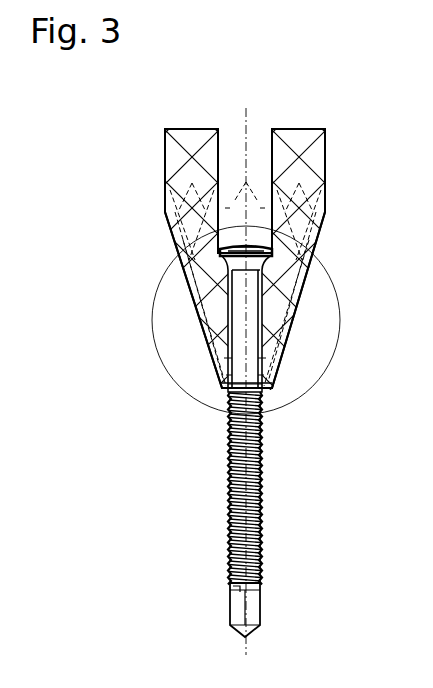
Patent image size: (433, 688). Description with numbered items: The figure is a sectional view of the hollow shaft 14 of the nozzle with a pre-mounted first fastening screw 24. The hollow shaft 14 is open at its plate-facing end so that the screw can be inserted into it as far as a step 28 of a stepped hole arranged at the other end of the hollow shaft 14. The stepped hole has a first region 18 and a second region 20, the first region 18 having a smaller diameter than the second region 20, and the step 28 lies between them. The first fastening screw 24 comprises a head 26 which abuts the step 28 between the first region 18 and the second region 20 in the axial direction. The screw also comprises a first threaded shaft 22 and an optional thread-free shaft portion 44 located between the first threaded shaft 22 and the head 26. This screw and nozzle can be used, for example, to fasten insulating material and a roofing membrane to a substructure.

The hollow shaft 14 is at (167, 165).
The second region 20 is at (316, 206).
The head 26 is at (247, 182).
The step 28 is at (265, 263).
The thread-free shaft portion 44 is at (226, 297).
The first region 18 is at (283, 318).
The first threaded shaft 22 is at (230, 480).
The first fastening screw 24 is at (290, 547).